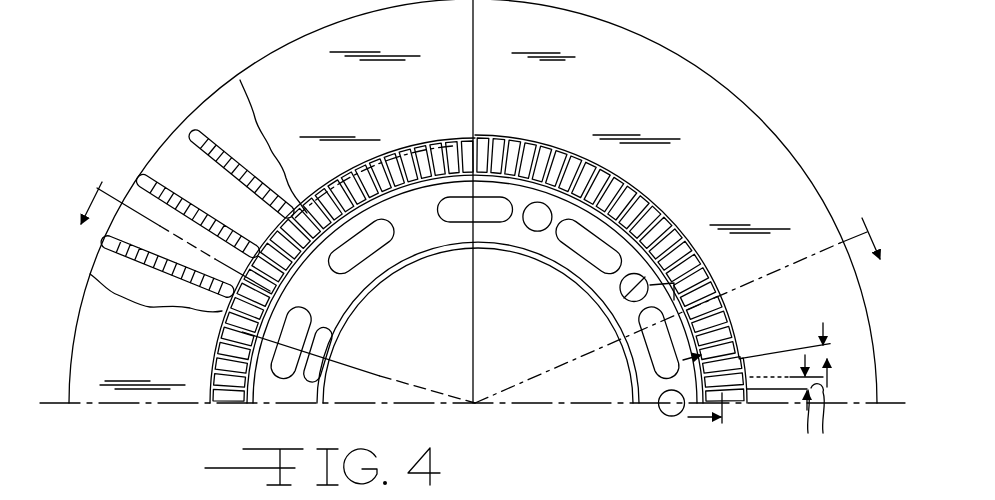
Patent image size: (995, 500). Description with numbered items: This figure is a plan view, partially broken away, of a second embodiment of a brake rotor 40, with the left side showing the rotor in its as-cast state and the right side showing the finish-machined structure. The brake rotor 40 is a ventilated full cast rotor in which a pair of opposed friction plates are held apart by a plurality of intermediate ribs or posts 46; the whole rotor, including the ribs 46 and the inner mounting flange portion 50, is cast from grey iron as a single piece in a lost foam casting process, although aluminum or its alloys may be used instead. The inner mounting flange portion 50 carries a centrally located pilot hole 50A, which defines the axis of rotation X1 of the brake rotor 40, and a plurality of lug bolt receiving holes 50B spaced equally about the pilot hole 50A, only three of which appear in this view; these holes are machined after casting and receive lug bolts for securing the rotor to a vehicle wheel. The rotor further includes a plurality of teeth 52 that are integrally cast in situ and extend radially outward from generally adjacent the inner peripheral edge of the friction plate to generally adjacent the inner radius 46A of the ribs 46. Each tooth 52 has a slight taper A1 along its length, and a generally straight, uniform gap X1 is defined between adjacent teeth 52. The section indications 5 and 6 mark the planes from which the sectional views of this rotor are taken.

The section line 5- 5 is at (469, 292).
The gap dimension 6 is at (695, 390).
The brake rotor 40 is at (866, 412).
The intermediate ribs 46 is at (150, 268).
The inner radius of the ribs 46A is at (276, 282).
The inner mounting flange portion 50 is at (412, 238).
The pilot hole 50A is at (512, 252).
The lug bolt receiving holes 50B is at (620, 292).
The teeth 52 is at (221, 406).
The taper A1 is at (829, 346).
The axis of rotation / gap X1 is at (796, 428).